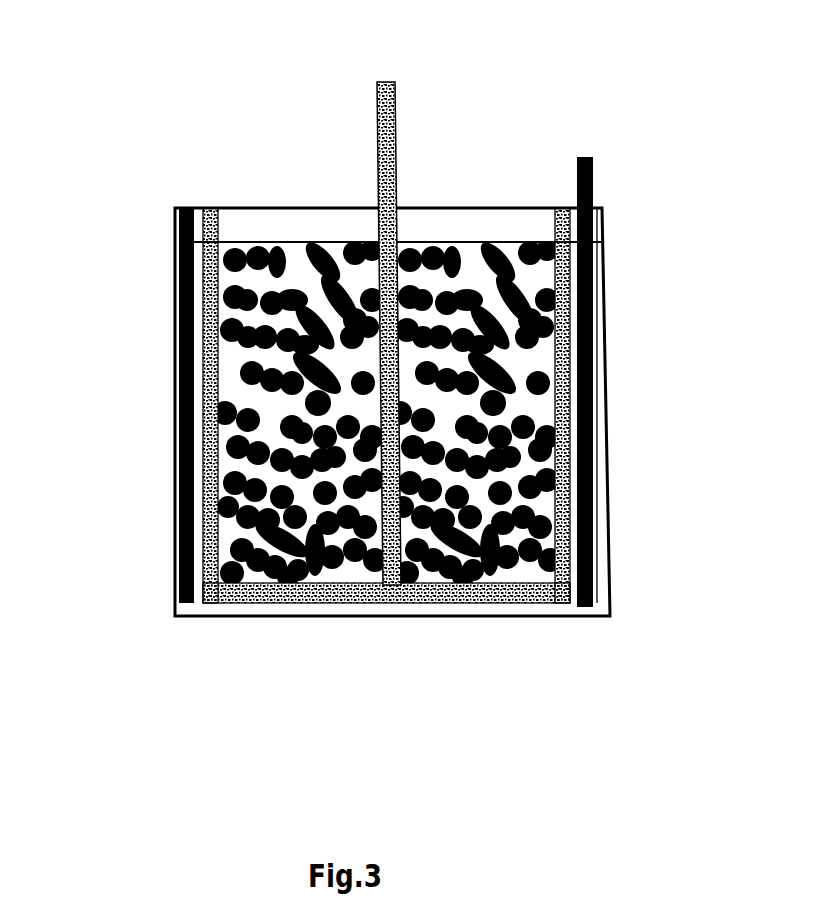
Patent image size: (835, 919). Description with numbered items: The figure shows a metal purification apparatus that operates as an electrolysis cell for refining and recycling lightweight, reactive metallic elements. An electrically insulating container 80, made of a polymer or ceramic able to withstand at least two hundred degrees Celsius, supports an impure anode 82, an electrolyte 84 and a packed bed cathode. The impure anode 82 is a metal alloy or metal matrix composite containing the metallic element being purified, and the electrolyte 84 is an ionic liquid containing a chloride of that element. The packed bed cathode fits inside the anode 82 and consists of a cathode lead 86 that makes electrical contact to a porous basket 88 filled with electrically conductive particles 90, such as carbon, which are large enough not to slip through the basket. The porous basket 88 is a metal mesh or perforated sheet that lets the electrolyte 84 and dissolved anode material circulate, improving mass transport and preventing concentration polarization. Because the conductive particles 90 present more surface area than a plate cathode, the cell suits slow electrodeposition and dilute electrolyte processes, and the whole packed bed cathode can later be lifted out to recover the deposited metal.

The container 80 is at (567, 617).
The impure anode 82 is at (594, 160).
The electrolyte 84 is at (298, 558).
The cathode lead 86 is at (435, 62).
The porous basket 88 is at (201, 209).
The conductive particles 90 is at (465, 270).